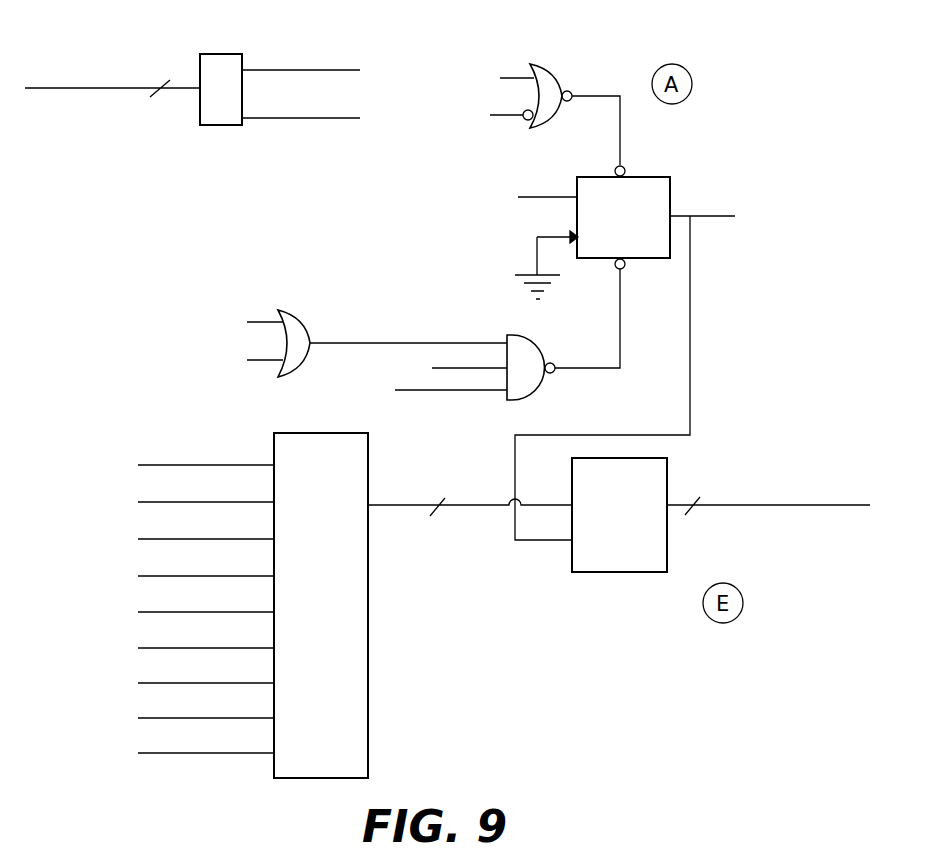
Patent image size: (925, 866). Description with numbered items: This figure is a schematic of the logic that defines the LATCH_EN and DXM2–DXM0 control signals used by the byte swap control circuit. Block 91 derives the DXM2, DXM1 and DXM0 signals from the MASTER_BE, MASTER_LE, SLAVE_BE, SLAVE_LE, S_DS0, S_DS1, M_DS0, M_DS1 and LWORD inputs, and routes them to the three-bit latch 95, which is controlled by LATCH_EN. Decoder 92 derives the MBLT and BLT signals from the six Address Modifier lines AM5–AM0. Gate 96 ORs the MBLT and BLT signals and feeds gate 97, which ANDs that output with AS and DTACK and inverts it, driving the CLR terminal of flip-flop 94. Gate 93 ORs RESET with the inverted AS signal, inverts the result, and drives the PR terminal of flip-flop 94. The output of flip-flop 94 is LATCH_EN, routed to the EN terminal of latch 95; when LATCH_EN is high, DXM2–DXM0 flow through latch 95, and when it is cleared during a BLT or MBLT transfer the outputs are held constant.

The block 91 is at (368, 725).
The decoder 92 is at (222, 54).
The gate 93 is at (552, 73).
The flip-flop 94 is at (665, 177).
The latch 95 is at (625, 572).
The gate 96 is at (293, 312).
The gate 97 is at (510, 335).